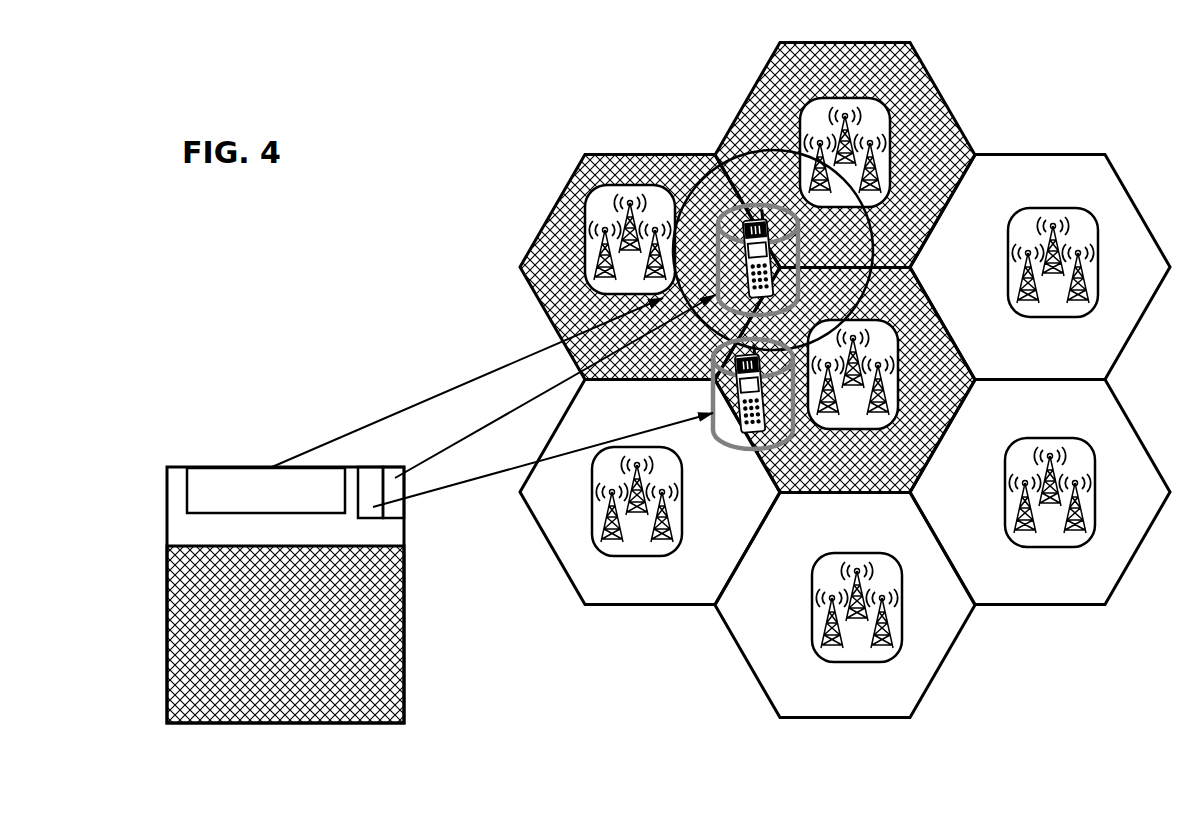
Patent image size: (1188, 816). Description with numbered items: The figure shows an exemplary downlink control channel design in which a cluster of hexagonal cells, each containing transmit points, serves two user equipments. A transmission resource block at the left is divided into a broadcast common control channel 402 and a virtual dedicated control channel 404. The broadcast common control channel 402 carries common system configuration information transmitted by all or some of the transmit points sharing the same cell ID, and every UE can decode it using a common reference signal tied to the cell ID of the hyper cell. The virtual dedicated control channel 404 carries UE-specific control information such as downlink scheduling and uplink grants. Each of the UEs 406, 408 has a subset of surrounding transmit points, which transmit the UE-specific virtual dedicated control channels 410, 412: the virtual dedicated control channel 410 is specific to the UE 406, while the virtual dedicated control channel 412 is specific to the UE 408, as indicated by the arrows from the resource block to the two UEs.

The broadcast common control channel 402 is at (215, 490).
The virtual dedicated control channel 404 is at (304, 526).
The UE 406 is at (752, 445).
The UE 408 is at (745, 225).
The virtual dedicated control channel 410 is at (375, 520).
The virtual dedicated control channel 412 is at (393, 522).